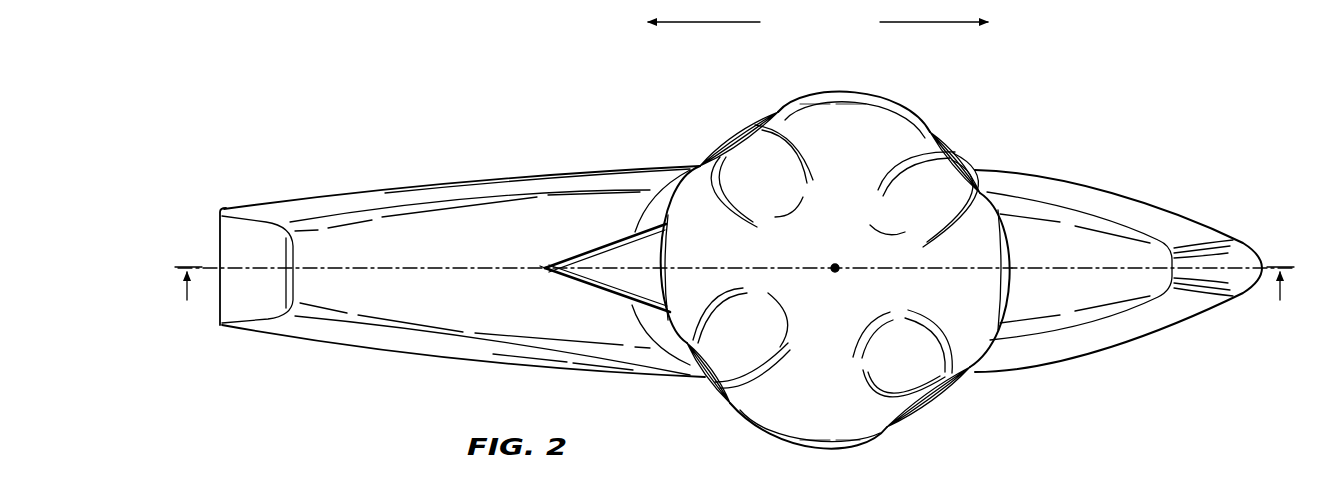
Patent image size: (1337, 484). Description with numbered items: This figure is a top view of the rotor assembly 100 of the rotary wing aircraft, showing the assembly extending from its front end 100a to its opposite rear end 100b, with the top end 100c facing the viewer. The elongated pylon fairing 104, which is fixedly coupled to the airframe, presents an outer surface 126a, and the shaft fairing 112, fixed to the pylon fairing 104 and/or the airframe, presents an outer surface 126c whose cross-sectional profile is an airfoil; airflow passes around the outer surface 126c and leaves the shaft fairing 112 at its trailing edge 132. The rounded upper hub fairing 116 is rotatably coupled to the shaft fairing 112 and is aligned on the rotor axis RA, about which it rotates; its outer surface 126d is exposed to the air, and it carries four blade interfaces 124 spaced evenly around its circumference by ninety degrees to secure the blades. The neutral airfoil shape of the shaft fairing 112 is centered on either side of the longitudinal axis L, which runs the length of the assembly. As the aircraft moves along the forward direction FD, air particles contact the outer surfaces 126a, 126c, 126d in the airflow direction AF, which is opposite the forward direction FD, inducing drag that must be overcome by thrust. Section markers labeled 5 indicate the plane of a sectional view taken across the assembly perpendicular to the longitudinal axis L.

The rotor assembly 100 is at (1048, 68).
The front end 100a is at (1180, 188).
The rear end 100b is at (219, 196).
The top end 100c is at (829, 318).
The pylon fairing 104 is at (407, 258).
The shaft fairing 112 is at (623, 260).
The upper hub fairing 116 is at (887, 227).
The blade interfaces 124 is at (714, 142).
The outer surface of the pylon fairing 126a is at (333, 237).
The outer surface of the shaft fairing 126c is at (582, 244).
The outer surface of the upper hub fairing 126d is at (863, 132).
The trailing edge 132 is at (545, 266).
The section line 5 is at (734, 300).
The longitudinal axis L is at (1080, 275).
The rotor axis RA is at (835, 264).
The airflow direction AF is at (688, 24).
The forward direction FD is at (942, 24).